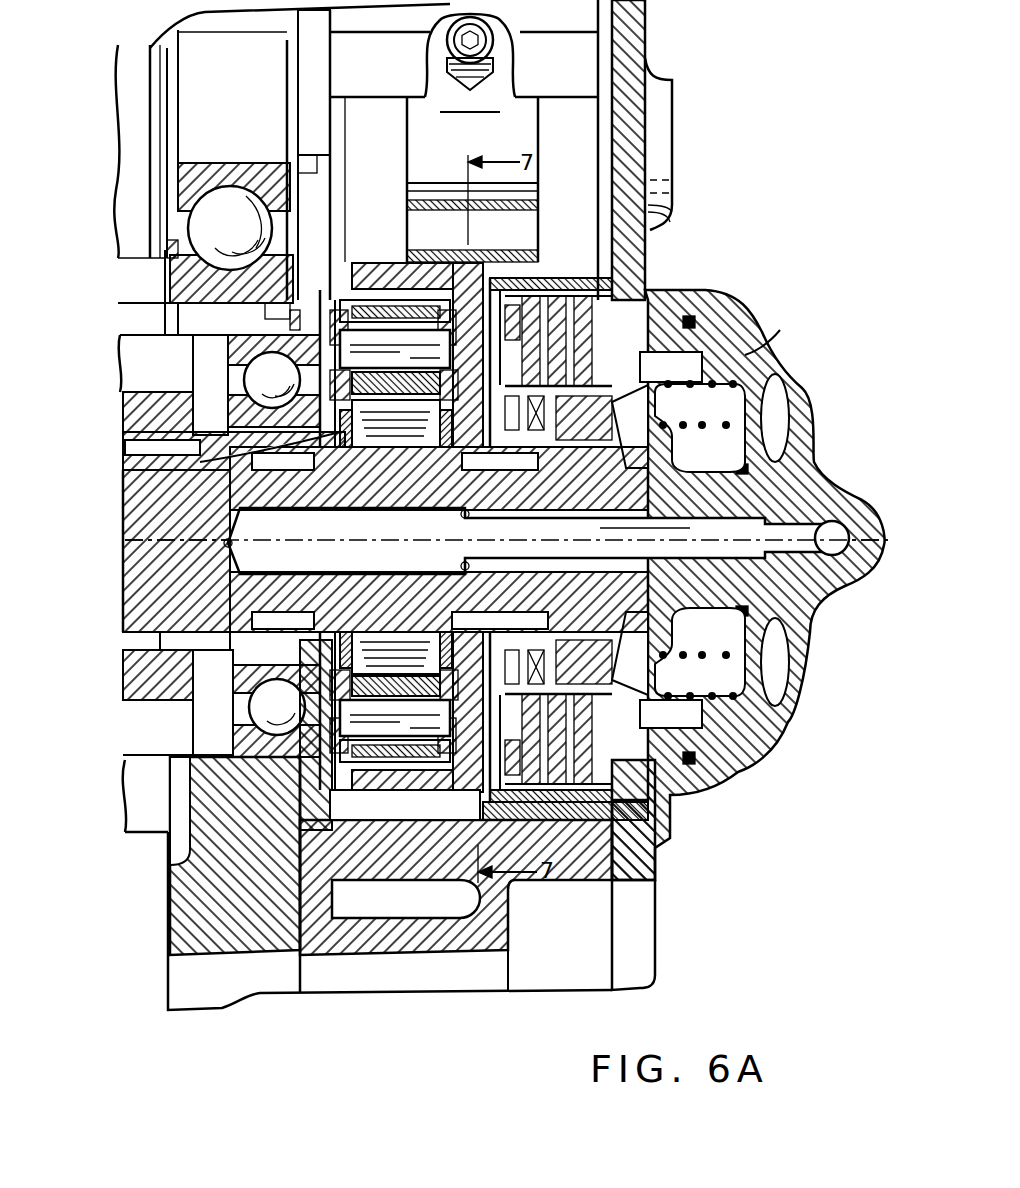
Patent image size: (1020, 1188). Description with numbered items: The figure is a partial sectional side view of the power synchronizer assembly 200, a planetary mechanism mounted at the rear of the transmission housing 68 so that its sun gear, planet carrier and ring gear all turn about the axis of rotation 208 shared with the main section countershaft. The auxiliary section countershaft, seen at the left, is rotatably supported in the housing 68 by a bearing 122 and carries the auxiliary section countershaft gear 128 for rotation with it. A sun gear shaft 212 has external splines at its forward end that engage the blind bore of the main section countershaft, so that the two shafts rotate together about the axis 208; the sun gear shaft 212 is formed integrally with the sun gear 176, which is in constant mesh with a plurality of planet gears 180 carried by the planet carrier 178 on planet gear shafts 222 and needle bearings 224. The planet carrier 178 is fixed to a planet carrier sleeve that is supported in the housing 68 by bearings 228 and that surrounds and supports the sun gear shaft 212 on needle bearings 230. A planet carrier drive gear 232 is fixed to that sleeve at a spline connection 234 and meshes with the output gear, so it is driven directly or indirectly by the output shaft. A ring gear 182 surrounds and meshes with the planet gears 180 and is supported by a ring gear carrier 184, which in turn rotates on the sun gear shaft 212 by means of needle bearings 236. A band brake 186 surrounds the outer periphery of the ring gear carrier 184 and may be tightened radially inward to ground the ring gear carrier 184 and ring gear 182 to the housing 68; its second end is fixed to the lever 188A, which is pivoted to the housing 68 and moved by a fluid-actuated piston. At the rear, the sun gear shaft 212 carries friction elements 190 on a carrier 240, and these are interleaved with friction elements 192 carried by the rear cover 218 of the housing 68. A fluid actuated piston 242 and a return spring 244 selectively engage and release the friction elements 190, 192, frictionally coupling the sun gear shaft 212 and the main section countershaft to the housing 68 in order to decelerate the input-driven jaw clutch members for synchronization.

The housing 68 is at (198, 876).
The bearing 122 is at (232, 200).
The auxiliary section countershaft gear 128 is at (138, 127).
The sun gear 176 is at (402, 662).
The planet carrier 178 is at (300, 795).
The planet gears 180 is at (393, 762).
The ring gear 182 is at (403, 760).
The ring gear carrier 184 is at (490, 806).
The band brake 186 is at (515, 266).
The lever 188A is at (430, 135).
The friction elements 190 is at (648, 298).
The friction elements 192 is at (670, 292).
The power synchronizer assembly 200 is at (712, 132).
The axis of rotation 208 is at (330, 543).
The sun gear shaft 212 is at (365, 600).
The rear cover 218 is at (628, 30).
The planet gear shafts 222 is at (370, 350).
The needle bearings 224 is at (398, 262).
The bearings 228 is at (235, 378).
The needle bearings 230 is at (285, 468).
The planet carrier drive gear 232 is at (163, 717).
The spline connection 234 is at (130, 450).
The needle bearings 236 is at (500, 463).
The carrier 240 is at (650, 402).
The fluid actuated piston 242 is at (765, 345).
The return spring 244 is at (730, 420).